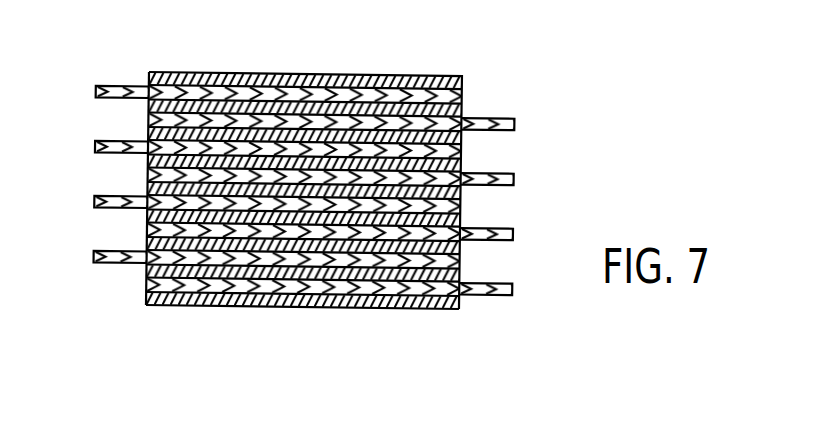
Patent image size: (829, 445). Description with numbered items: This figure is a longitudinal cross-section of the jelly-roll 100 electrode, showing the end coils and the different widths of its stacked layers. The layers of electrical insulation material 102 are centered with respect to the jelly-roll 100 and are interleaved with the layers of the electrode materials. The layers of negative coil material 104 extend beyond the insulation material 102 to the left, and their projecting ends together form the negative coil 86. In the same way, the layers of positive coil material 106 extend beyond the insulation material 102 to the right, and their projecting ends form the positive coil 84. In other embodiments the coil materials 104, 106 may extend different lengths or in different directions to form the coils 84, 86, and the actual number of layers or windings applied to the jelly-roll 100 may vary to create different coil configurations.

The jelly-roll 100 is at (377, 35).
The electrical insulation material 102 is at (465, 110).
The negative coil material 104 is at (118, 152).
The positive coil material 106 is at (515, 172).
The positive coil 84 is at (483, 302).
The negative coil 86 is at (123, 280).